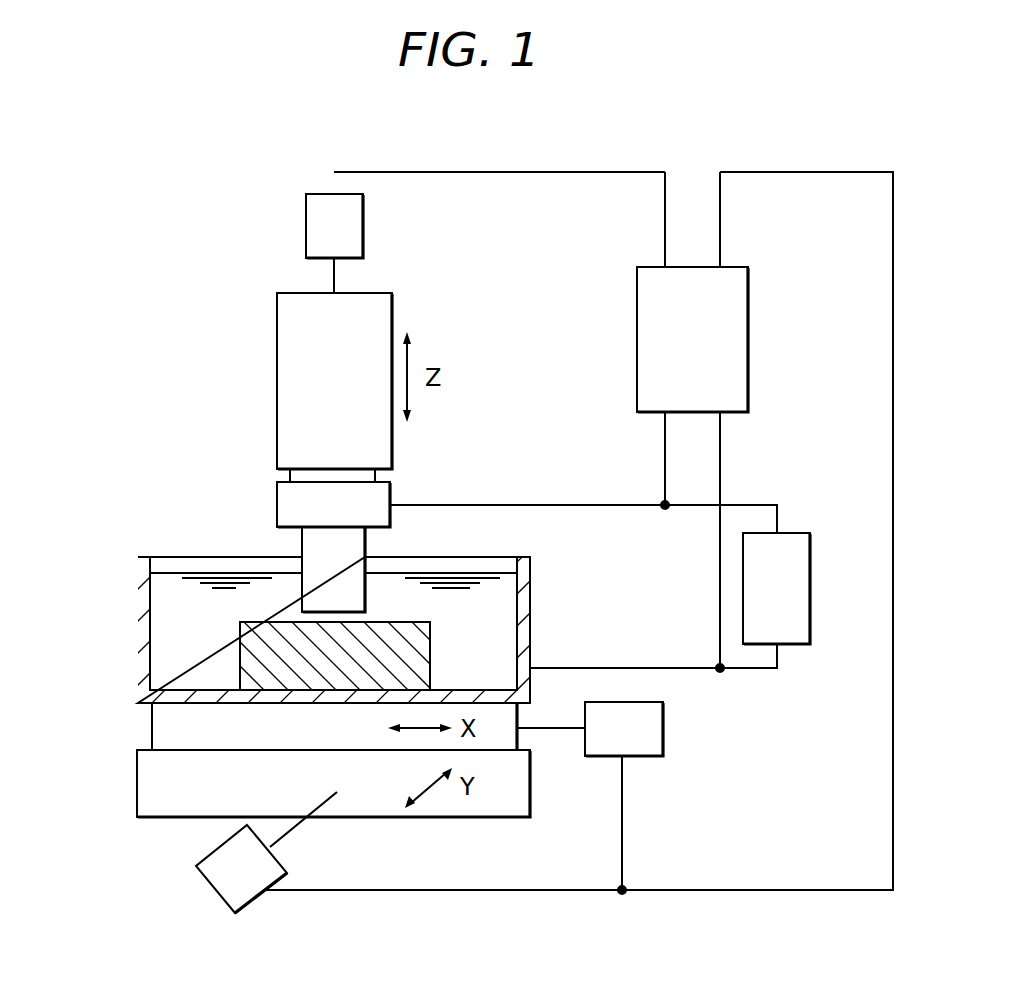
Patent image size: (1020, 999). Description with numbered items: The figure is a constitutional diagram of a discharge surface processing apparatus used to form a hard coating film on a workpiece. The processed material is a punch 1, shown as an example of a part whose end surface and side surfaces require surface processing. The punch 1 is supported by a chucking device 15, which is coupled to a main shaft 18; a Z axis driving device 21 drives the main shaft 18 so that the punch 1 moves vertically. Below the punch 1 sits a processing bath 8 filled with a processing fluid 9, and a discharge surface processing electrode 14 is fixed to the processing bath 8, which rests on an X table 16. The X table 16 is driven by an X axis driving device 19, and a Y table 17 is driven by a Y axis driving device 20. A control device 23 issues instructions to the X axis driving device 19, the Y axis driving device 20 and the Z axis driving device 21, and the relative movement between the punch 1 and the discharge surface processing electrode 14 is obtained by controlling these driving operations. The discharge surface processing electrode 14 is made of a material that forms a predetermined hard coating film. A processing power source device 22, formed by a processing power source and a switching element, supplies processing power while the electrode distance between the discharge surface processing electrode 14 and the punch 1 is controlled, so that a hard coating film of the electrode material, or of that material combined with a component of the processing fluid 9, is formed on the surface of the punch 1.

The punch 1 is at (302, 548).
The processing bath 8 is at (138, 601).
The processing fluid 9 is at (160, 590).
The discharge surface processing electrode 14 is at (240, 660).
The chucking device 15 is at (277, 503).
The X table 16 is at (152, 722).
The Y table 17 is at (137, 777).
The main shaft 18 is at (277, 350).
The X axis driving device 19 is at (663, 730).
The Y axis driving device 20 is at (223, 907).
The Z axis driving device 21 is at (306, 224).
The processing power source device 22 is at (810, 593).
The control device 23 is at (748, 340).